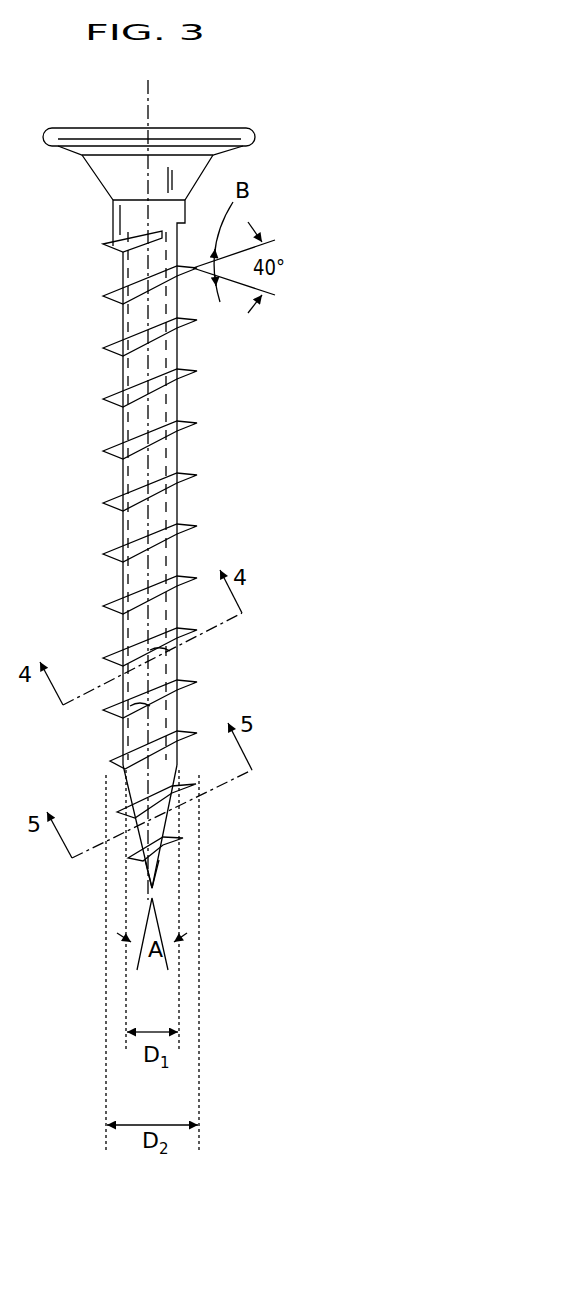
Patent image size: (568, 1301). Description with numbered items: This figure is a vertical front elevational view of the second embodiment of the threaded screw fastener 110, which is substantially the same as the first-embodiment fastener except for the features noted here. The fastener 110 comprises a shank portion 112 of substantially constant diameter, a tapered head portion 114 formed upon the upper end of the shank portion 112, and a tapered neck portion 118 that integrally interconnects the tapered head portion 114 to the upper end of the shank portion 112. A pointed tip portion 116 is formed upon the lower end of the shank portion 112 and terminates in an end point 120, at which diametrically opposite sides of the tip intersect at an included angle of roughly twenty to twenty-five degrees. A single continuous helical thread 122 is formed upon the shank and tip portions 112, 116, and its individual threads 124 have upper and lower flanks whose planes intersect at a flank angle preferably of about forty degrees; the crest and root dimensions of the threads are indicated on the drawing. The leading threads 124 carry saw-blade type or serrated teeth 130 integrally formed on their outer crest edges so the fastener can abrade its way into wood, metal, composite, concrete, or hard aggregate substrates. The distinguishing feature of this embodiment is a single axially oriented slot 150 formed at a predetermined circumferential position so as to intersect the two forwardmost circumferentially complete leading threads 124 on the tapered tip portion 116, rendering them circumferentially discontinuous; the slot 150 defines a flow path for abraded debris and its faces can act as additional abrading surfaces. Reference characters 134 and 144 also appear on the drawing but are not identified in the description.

The threaded screw fastener 110 is at (236, 112).
The shank portion 112 is at (170, 407).
The tapered head portion 114 is at (73, 133).
The pointed tip portion 116 is at (170, 857).
The tapered neck portion 118 is at (100, 184).
The end point 120 is at (151, 888).
The single continuous helical thread 122 is at (194, 473).
The individual threads 124 is at (117, 555).
The saw-blade type or serrated teeth 130 is at (130, 722).
The thread flank 134 is at (0, 280).
The root 144 is at (147, 418).
The axially oriented slot 150 is at (120, 783).